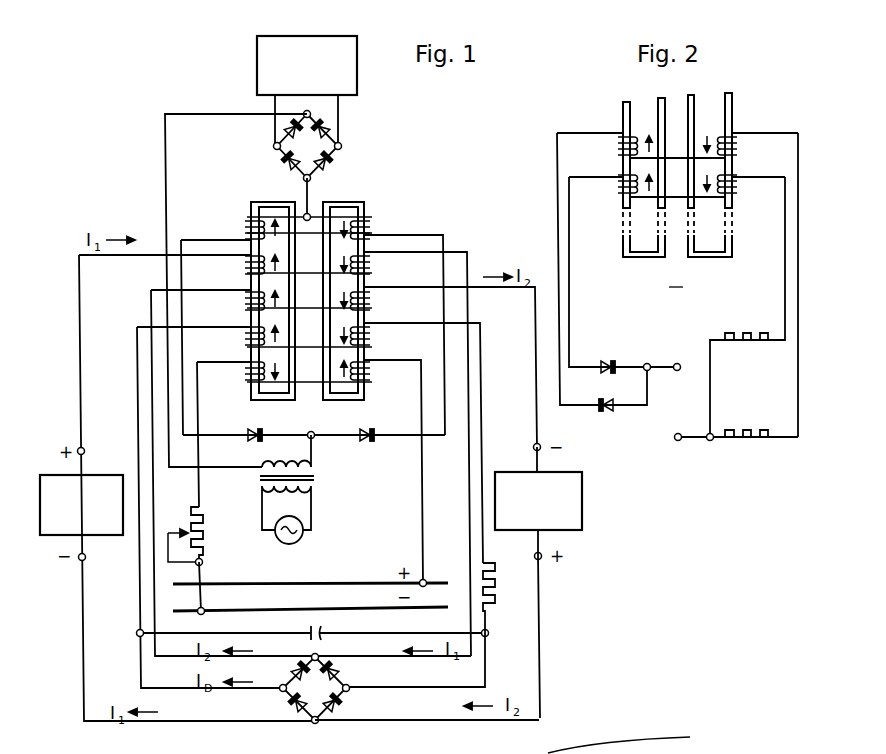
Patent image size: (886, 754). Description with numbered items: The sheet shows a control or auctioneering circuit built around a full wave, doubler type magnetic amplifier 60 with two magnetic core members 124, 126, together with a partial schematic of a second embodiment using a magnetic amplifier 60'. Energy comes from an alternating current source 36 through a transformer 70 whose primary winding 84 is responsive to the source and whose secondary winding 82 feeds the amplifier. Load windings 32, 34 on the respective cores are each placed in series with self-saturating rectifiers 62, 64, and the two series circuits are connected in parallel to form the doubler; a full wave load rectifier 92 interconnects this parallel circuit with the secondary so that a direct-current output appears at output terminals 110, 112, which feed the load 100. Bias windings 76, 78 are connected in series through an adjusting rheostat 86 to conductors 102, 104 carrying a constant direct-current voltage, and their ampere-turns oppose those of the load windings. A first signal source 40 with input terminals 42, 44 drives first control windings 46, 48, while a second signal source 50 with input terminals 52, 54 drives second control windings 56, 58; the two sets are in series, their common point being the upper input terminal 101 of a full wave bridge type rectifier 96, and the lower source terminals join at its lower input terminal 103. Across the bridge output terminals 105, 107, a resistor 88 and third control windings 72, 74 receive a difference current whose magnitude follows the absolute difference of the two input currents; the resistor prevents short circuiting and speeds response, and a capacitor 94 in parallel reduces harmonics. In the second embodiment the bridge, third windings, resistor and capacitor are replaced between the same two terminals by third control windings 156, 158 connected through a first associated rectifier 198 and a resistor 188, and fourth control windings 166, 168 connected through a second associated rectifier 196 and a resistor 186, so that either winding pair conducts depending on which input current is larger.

In FIG. 1, the load 100 is at (251, 74).
In FIG. 1, the full wave load rectifier 92 is at (299, 153).
In FIG. 1, the output terminal 110 is at (272, 148).
In FIG. 1, the output terminal 112 is at (342, 146).
In FIG. 1, the magnetic core member 124 is at (274, 200).
In FIG. 2, the magnetic core member 124 is at (620, 118).
In FIG. 1, the magnetic core member 126 is at (343, 202).
In FIG. 2, the magnetic core member 126 is at (735, 113).
In FIG. 1, the magnetic amplifier 60 is at (307, 298).
In FIG. 2, the magnetic amplifier 60' is at (680, 277).
In FIG. 1, the load winding 32 is at (245, 226).
In FIG. 1, the load winding 34 is at (371, 226).
In FIG. 1, the first control winding 46 is at (245, 263).
In FIG. 1, the first control winding 48 is at (371, 266).
In FIG. 1, the second control winding 56 is at (247, 300).
In FIG. 1, the second control winding 58 is at (371, 302).
In FIG. 1, the third control winding 72 is at (247, 334).
In FIG. 1, the third control winding 74 is at (371, 338).
In FIG. 1, the bias winding 76 is at (247, 372).
In FIG. 1, the bias winding 78 is at (371, 373).
In FIG. 1, the self-saturating rectifier 62 is at (251, 428).
In FIG. 1, the self-saturating rectifier 64 is at (371, 430).
In FIG. 1, the transformer 70 is at (307, 486).
In FIG. 1, the secondary winding 82 is at (296, 463).
In FIG. 1, the primary winding 84 is at (283, 491).
In FIG. 1, the alternating current source 36 is at (301, 540).
In FIG. 1, the adjusting rheostat 86 is at (208, 532).
In FIG. 1, the conductor 102 is at (232, 581).
In FIG. 1, the conductor 104 is at (232, 608).
In FIG. 1, the capacitor 94 is at (327, 629).
In FIG. 1, the resistor 88 is at (499, 595).
In FIG. 1, the full wave bridge type rectifier 96 is at (307, 694).
In FIG. 1, the upper input terminal 101 is at (319, 654).
In FIG. 2, the upper input terminal 101 is at (674, 362).
In FIG. 1, the lower input terminal 103 is at (311, 725).
In FIG. 2, the lower input terminal 103 is at (674, 443).
In FIG. 1, the output terminal 105 is at (279, 692).
In FIG. 1, the output terminal 107 is at (350, 690).
In FIG. 1, the first signal source 40 is at (58, 474).
In FIG. 1, the input terminal 42 is at (84, 449).
In FIG. 1, the input terminal 44 is at (86, 557).
In FIG. 1, the second signal source 50 is at (583, 492).
In FIG. 1, the input terminal 52 is at (534, 446).
In FIG. 1, the input terminal 54 is at (535, 556).
In FIG. 2, the third control winding 156 is at (618, 152).
In FIG. 2, the third control winding 158 is at (740, 152).
In FIG. 2, the fourth control winding 166 is at (618, 188).
In FIG. 2, the fourth control winding 168 is at (740, 190).
In FIG. 2, the resistor 186 is at (754, 324).
In FIG. 2, the resistor 188 is at (740, 427).
In FIG. 2, the second associated rectifier 196 is at (610, 358).
In FIG. 2, the first associated rectifier 198 is at (608, 398).